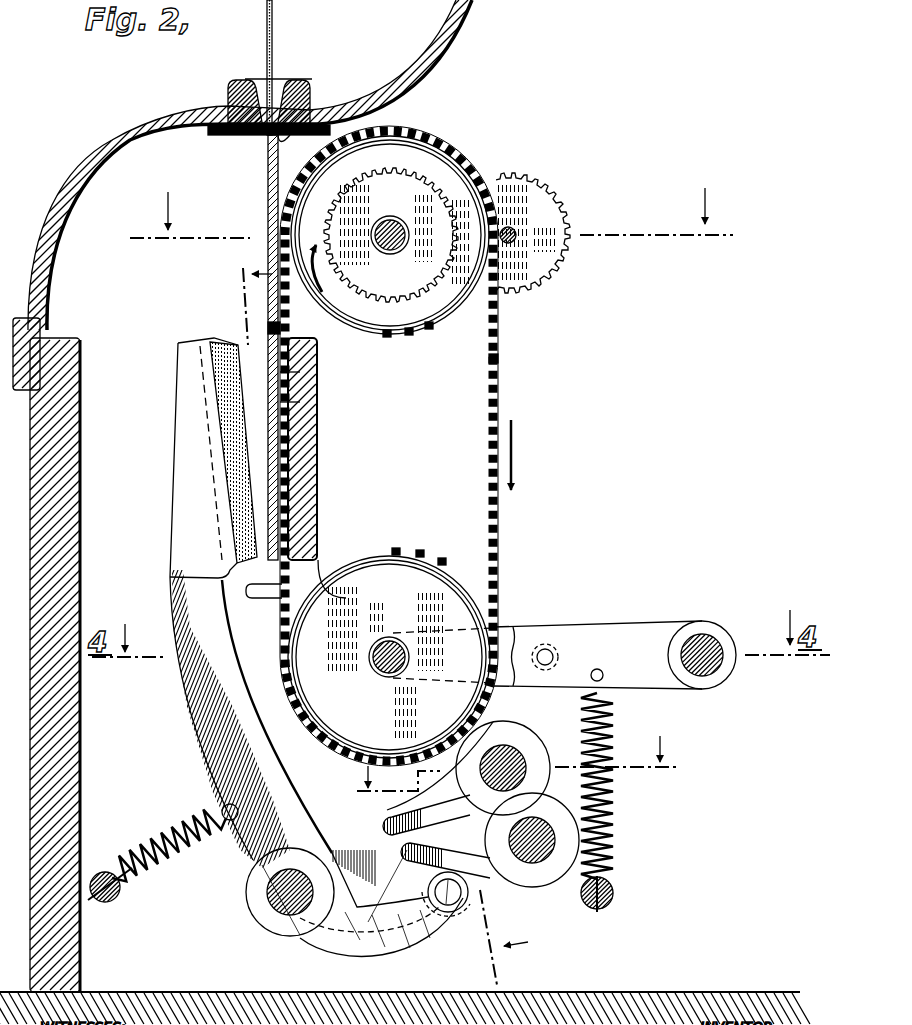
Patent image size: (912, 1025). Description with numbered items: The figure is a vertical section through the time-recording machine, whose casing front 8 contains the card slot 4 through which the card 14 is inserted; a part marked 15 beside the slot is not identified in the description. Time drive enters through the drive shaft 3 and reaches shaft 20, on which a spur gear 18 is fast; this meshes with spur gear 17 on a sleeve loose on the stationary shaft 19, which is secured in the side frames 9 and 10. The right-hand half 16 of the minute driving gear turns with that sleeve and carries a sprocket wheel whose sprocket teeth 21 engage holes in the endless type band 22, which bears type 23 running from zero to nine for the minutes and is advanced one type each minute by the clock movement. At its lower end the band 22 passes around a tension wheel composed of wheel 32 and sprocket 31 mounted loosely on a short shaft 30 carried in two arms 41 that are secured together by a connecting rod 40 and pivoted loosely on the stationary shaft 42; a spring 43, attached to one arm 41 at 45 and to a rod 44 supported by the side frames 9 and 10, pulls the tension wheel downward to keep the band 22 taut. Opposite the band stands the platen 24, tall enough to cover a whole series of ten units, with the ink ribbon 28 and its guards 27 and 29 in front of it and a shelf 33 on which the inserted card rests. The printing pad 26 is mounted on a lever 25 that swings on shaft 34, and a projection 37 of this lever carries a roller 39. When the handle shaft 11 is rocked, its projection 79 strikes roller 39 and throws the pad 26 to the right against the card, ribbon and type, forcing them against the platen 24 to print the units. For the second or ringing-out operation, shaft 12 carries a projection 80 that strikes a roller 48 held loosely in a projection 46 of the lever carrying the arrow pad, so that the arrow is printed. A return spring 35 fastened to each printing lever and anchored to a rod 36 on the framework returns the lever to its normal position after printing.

The drive shaft 3 is at (427, 222).
The card slot 4 is at (312, 86).
The casing front 8 is at (66, 200).
The side frame 9 is at (384, 612).
The side frame 10 is at (528, 763).
The shaft 11 is at (536, 864).
The shaft 12 is at (512, 760).
The card 14 is at (272, 40).
The guide plate 15 is at (283, 158).
The right-hand half of the minute driving gear 16 is at (420, 165).
The spur gear 17 is at (410, 200).
The spur gear 18 is at (527, 200).
The shaft 19 is at (392, 252).
The shaft 20 is at (515, 240).
The sprocket teeth 21 is at (445, 330).
The endless type band 22 is at (490, 378).
The type 23 is at (498, 366).
The platen 24 is at (303, 450).
The lever 25 is at (213, 368).
The printing pad 26 is at (233, 345).
The ink ribbon guard 27 is at (283, 333).
The ink ribbon 28 is at (300, 372).
The ink ribbon guard 29 is at (300, 402).
The short shaft 30 is at (393, 640).
The sprocket 31 is at (442, 565).
The wheel 32 is at (366, 580).
The shelf 33 is at (260, 598).
The shaft 34 is at (283, 900).
The return spring 35 is at (213, 862).
The rod 36 is at (108, 903).
The projection 37 is at (406, 945).
The roller 39 is at (469, 892).
The connecting rod 40 is at (549, 652).
The arm 41 is at (623, 640).
The stationary shaft 42 is at (707, 648).
The spring 43 is at (611, 808).
The rod 44 is at (614, 892).
The spring connection point 45 is at (601, 680).
The projection 46 is at (391, 872).
The roller 48 is at (420, 809).
The projection 79 is at (407, 860).
The projection 80 is at (420, 806).